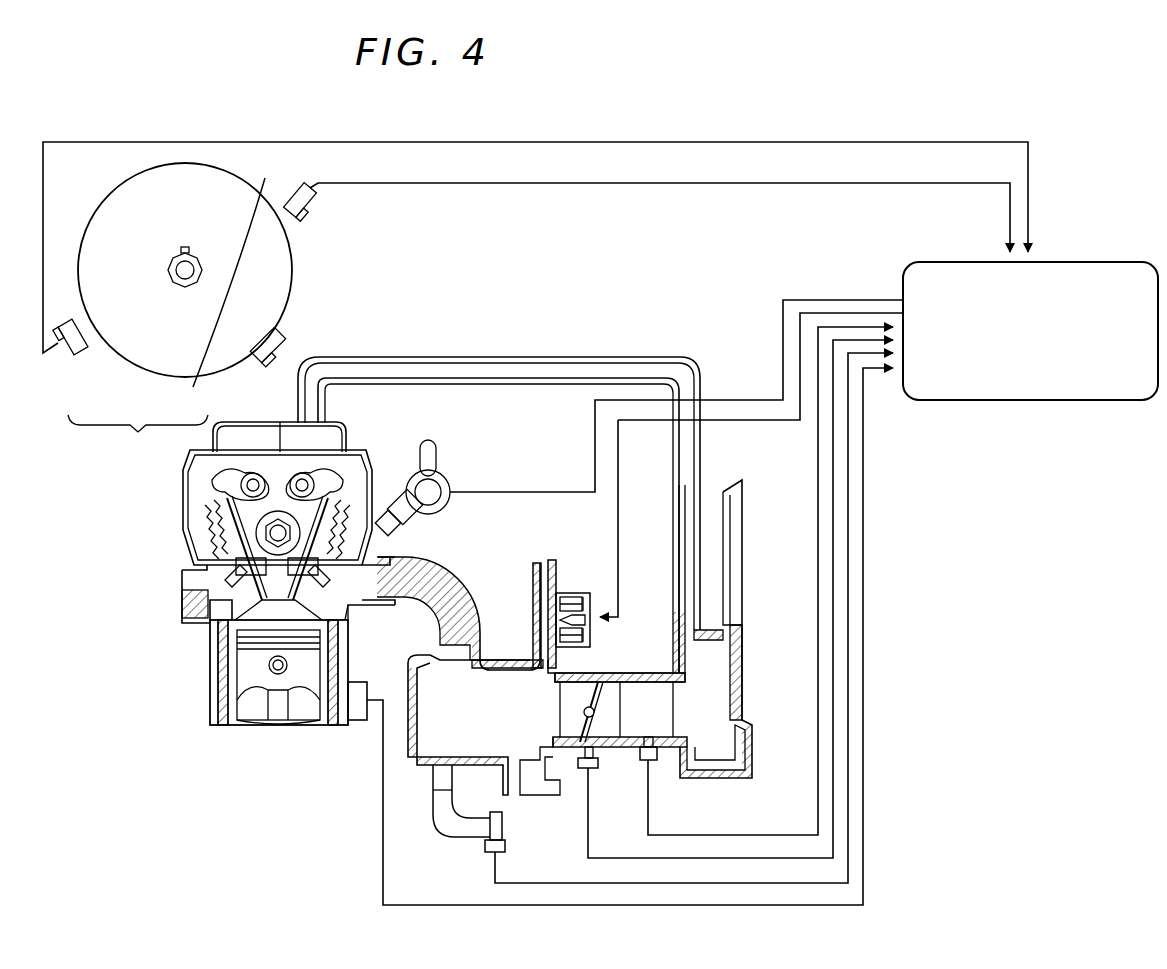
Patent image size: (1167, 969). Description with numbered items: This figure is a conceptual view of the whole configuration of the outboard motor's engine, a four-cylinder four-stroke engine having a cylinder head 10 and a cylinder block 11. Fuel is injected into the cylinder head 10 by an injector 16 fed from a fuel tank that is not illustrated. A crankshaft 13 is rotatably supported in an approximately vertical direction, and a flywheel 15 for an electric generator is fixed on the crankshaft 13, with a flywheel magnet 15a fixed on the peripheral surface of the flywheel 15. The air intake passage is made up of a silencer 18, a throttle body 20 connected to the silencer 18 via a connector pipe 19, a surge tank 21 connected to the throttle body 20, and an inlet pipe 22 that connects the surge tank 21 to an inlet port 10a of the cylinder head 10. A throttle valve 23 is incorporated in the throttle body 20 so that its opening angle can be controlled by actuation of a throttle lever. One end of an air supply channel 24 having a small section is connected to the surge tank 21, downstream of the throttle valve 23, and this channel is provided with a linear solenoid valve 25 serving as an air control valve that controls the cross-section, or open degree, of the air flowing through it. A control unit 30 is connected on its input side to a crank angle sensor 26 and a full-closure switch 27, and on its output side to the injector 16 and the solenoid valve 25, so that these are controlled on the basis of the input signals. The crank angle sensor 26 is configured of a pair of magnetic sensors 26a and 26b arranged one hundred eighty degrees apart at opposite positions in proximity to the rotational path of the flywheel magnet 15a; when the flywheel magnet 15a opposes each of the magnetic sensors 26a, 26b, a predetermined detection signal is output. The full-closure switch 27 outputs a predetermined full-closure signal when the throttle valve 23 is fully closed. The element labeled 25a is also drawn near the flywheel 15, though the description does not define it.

The cylinder head 10 is at (194, 556).
The inlet port 10a is at (378, 612).
The cylinder block 11 is at (212, 692).
The crankshaft 13 is at (200, 256).
The flywheel 15 is at (104, 200).
The flywheel magnet 15a is at (284, 346).
The injector 16 is at (418, 522).
The silencer 18 is at (745, 666).
The connector pipe 19 is at (656, 762).
The throttle body 20 is at (605, 673).
The surge tank 21 is at (415, 765).
The inlet pipe 22 is at (468, 575).
The throttle valve 23 is at (598, 712).
The air supply channel 24 is at (533, 580).
The linear solenoid valve 25 is at (566, 590).
The reference sensor 25a is at (310, 212).
The crank angle sensor 26 is at (138, 440).
The magnetic sensor 26a is at (211, 297).
The magnetic sensor 26b is at (82, 352).
The full-closure switch 27 is at (577, 766).
The control unit 30 is at (1018, 402).